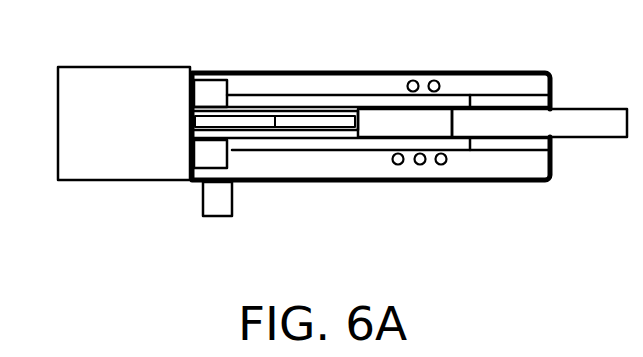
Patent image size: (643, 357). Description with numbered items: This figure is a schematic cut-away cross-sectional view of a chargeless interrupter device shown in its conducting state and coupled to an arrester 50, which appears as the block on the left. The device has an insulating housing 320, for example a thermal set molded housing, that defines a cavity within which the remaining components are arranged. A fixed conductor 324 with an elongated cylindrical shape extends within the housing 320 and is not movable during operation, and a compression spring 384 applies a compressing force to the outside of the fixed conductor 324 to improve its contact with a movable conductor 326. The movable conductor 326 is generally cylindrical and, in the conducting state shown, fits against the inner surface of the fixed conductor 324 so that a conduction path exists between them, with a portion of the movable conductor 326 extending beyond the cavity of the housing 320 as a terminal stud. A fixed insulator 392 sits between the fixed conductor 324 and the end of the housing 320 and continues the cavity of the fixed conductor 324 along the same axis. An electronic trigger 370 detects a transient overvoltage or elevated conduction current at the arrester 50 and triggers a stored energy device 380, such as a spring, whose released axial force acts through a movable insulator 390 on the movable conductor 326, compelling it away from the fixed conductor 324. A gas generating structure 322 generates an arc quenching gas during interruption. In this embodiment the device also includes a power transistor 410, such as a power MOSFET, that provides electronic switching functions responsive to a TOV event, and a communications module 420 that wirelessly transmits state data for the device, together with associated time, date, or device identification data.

The arrester 50 is at (123, 82).
The housing 320 is at (242, 70).
The gas generating structure 322 is at (201, 165).
The fixed conductor 324 is at (323, 98).
The movable conductor 326 is at (507, 123).
The electronic trigger 370 is at (233, 120).
The stored energy device 380 is at (337, 120).
The compression spring 384 is at (433, 71).
The movable insulator 390 is at (387, 123).
The fixed insulator 392 is at (520, 100).
The power transistor 410 is at (193, 70).
The communications module 420 is at (217, 208).